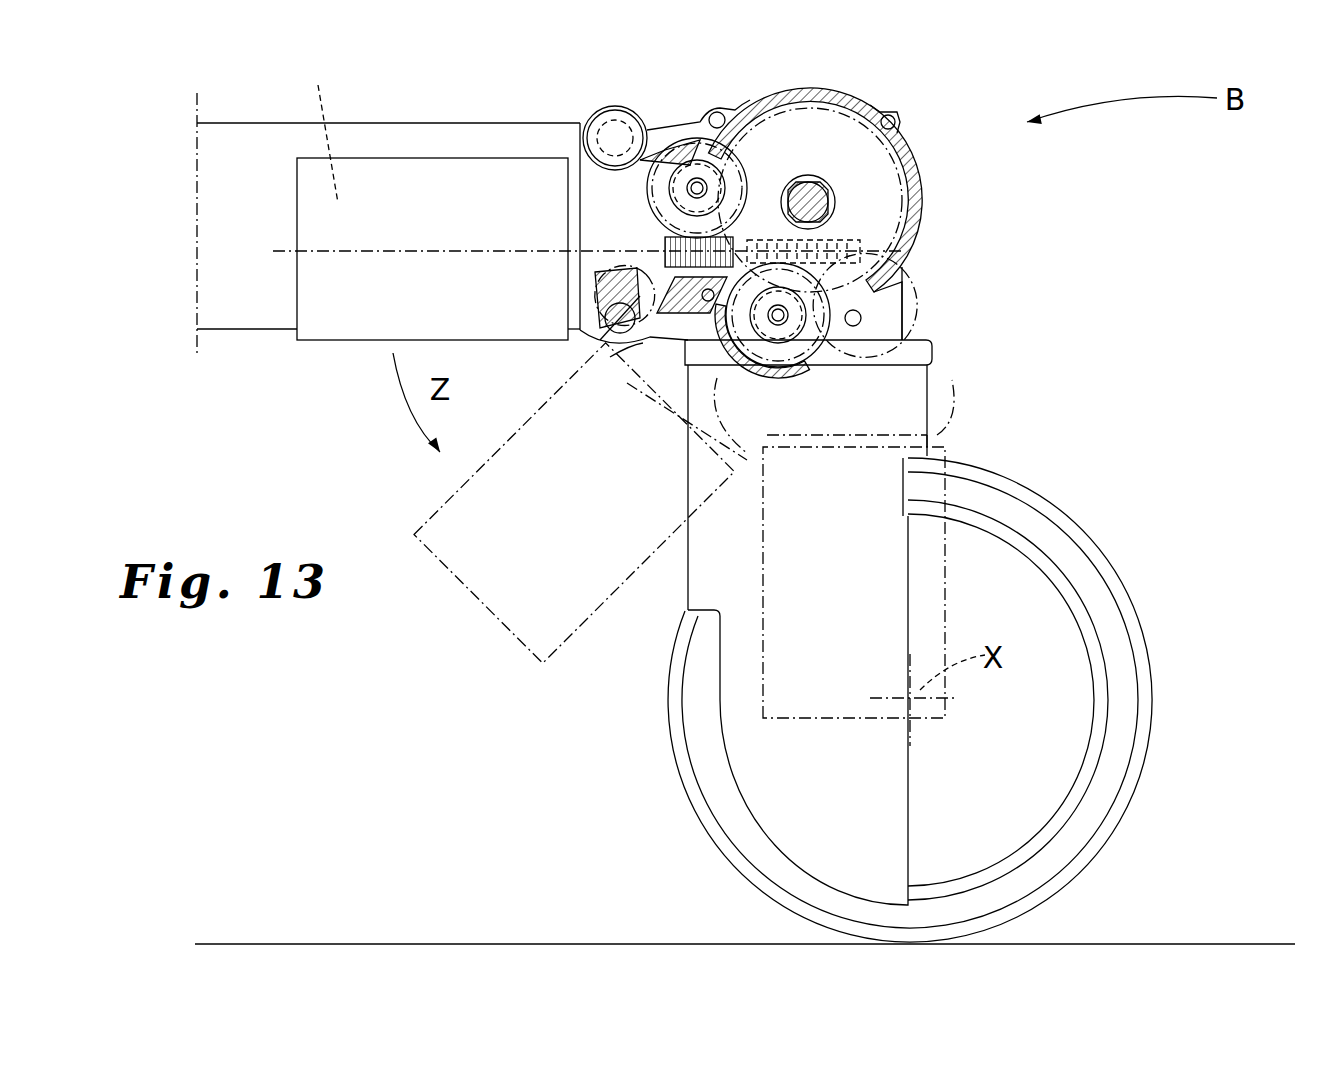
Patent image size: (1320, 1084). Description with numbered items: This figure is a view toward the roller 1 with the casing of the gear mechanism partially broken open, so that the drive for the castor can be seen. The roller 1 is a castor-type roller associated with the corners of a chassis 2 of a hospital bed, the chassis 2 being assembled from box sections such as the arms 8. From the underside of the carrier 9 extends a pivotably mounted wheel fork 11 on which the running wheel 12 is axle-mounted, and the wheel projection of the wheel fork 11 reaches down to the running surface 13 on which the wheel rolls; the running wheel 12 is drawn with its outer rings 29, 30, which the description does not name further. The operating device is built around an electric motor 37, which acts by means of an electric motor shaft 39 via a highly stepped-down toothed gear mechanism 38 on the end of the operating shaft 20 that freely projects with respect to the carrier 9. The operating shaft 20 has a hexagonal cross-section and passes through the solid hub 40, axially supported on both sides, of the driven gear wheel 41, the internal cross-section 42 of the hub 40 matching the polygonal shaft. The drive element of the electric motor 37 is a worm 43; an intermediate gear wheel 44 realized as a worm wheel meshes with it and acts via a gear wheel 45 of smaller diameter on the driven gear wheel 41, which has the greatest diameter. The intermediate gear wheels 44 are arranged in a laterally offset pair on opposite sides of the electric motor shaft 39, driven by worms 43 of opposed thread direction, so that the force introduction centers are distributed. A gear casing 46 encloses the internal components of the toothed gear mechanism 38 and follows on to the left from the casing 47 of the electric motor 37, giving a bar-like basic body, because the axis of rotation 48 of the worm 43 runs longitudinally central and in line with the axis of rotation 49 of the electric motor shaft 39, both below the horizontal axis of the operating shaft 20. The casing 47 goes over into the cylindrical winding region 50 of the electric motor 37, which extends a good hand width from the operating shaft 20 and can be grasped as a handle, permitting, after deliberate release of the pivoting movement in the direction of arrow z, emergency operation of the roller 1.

The roller 1 is at (993, 417).
The chassis 2 is at (248, 331).
The arms 8 is at (247, 123).
The carrier 9 is at (907, 293).
The wheel fork 11 is at (797, 780).
The running wheel 12 is at (1073, 460).
The running surface 13 is at (1223, 940).
The operating shaft 20 is at (790, 187).
The rim 29 is at (1053, 896).
The tire 30 is at (1087, 813).
The electric motor 37 is at (493, 145).
The toothed gear mechanism 38 is at (710, 312).
The electric motor shaft 39 is at (610, 357).
The hub 40 is at (835, 205).
The driven gear wheel 41 is at (873, 180).
The internal cross-section of the hub 42 is at (830, 187).
The worm 43 is at (700, 312).
The intermediate gear wheel 44 is at (660, 212).
The gear wheel 45 is at (685, 188).
The gear casing 46 is at (813, 92).
The casing of the electric motor 47 is at (403, 158).
The axis of rotation of the worm 48 is at (710, 112).
The axis of rotation of the electric motor shaft 49 is at (348, 252).
The winding region 50 is at (318, 128).